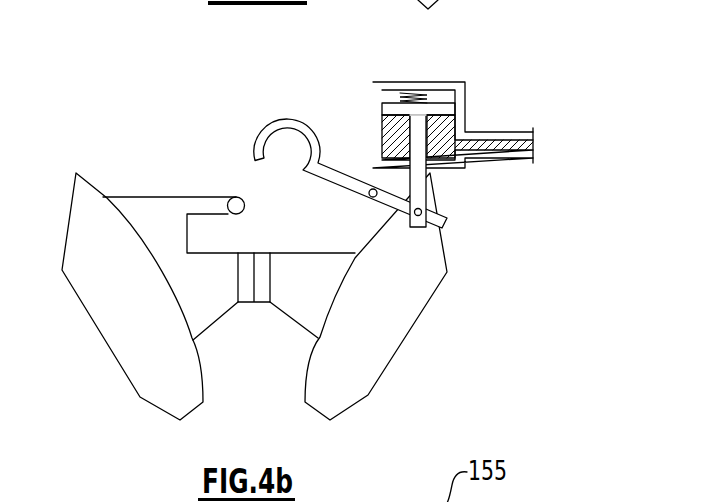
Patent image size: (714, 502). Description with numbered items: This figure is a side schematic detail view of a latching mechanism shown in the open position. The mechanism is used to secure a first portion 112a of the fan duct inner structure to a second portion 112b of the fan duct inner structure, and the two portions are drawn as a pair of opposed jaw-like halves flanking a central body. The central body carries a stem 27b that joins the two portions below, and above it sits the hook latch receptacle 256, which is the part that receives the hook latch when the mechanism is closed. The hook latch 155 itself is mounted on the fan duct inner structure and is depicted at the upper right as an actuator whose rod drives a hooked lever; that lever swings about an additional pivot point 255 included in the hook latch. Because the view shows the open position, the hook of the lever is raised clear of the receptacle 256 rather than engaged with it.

The hook latch 155 is at (480, 62).
The pivot point 255 is at (369, 189).
The hook latch receptacle 256 is at (176, 197).
The stem with struts 27b is at (307, 370).
The first portion of the fan duct inner structure 112a is at (197, 410).
The second portion of the fan duct inner structure 112b is at (313, 410).